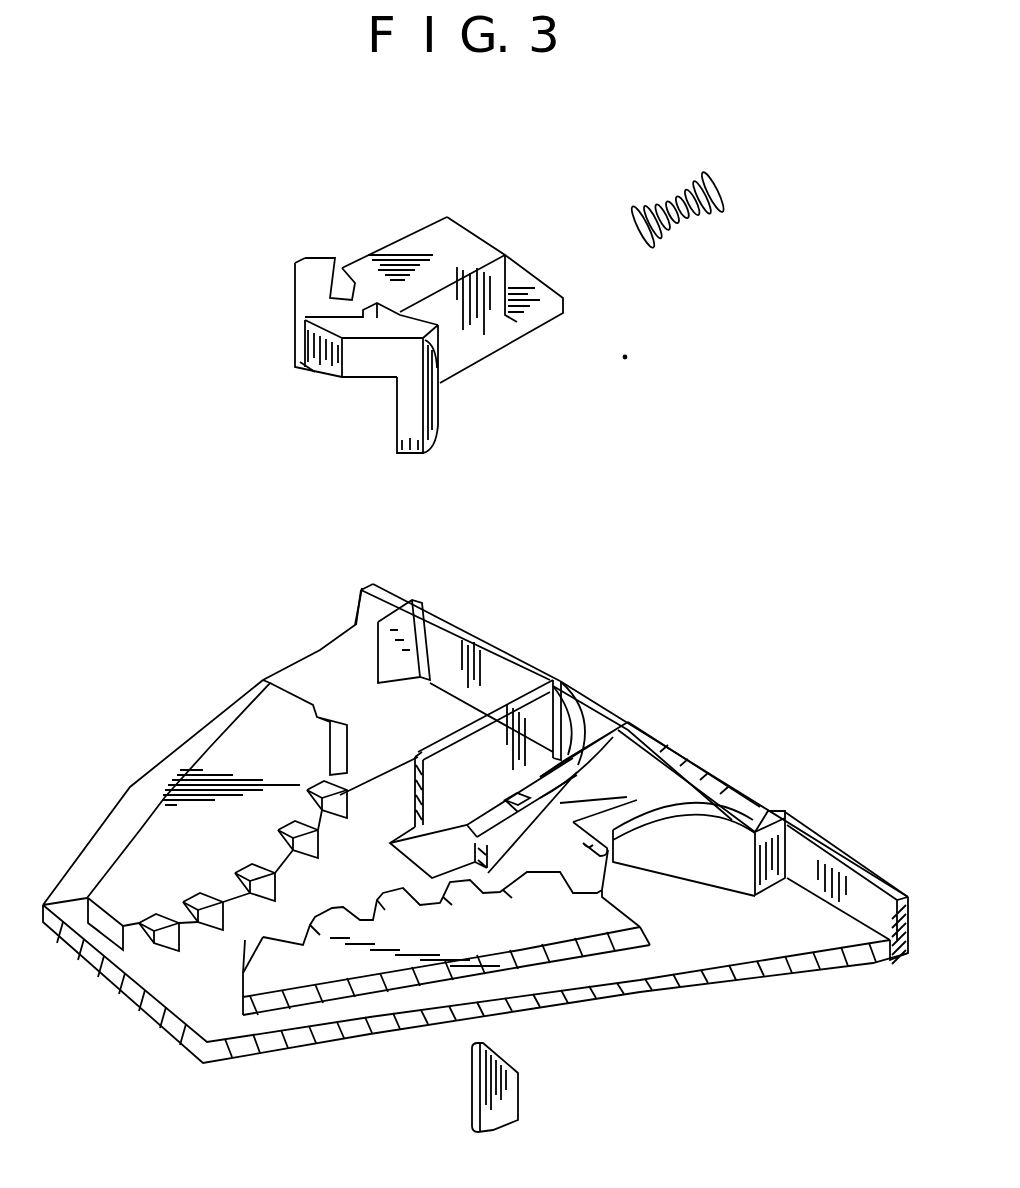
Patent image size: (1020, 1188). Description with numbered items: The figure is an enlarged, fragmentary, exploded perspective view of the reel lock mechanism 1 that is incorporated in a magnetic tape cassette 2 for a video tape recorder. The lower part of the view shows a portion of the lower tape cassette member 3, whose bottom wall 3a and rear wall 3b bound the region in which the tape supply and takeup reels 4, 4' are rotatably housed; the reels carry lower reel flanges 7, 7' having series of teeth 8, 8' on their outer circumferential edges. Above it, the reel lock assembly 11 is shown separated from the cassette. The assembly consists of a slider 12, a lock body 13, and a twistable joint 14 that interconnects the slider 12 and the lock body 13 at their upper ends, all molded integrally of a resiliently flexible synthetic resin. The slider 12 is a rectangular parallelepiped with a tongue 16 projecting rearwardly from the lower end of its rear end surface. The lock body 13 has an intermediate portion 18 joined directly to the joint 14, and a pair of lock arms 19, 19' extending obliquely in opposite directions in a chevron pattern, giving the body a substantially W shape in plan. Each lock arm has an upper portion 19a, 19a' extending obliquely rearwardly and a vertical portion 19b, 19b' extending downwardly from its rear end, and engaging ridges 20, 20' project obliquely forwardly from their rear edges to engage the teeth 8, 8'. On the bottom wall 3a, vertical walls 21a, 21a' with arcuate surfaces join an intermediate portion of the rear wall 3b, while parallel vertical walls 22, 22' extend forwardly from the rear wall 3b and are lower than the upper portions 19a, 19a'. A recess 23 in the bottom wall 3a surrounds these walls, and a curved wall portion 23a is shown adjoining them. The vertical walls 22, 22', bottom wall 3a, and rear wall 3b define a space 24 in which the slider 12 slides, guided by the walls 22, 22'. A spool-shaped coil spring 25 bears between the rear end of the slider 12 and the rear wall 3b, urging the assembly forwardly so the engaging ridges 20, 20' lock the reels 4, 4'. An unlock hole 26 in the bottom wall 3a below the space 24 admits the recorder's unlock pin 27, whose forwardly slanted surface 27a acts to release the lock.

The reel lock mechanism 1 is at (711, 479).
The magnetic tape cassette 2 is at (810, 833).
The lower tape cassette member 3 is at (835, 850).
The bottom wall 3a is at (837, 923).
The rear wall 3b is at (583, 710).
The tape supply reel 4 is at (470, 964).
The tape takeup reel 4' is at (202, 746).
The lower reel flange 7 is at (502, 924).
The lower reel flange 7' is at (231, 745).
The teeth 8 is at (427, 925).
The teeth 8' is at (221, 808).
The reel lock assembly 11 is at (430, 220).
The slider 12 is at (413, 230).
The lock body 13 is at (335, 360).
The twistable joint 14 is at (357, 268).
The tongue 16 is at (530, 277).
The intermediate portion 18 is at (310, 348).
The lock arm 19 is at (387, 389).
The lock arm 19' is at (297, 317).
The upper portion 19a is at (419, 283).
The upper portion 19a' is at (283, 328).
The vertical portion 19b is at (399, 478).
The vertical portion 19b' is at (268, 397).
The engaging ridge 20 is at (468, 389).
The engaging ridge 20' is at (307, 291).
The vertical wall 21a is at (746, 812).
The vertical wall 21a' is at (444, 631).
The vertical wall 22 is at (689, 747).
The vertical wall 22' is at (460, 680).
The recess 23 is at (383, 770).
The curved wall 23a is at (617, 800).
The space 24 is at (555, 770).
The coil spring 25 is at (657, 203).
The unlock hole 26 is at (507, 800).
The unlock pin 27 is at (472, 1083).
The forwardly slanted surface 27a is at (493, 1050).